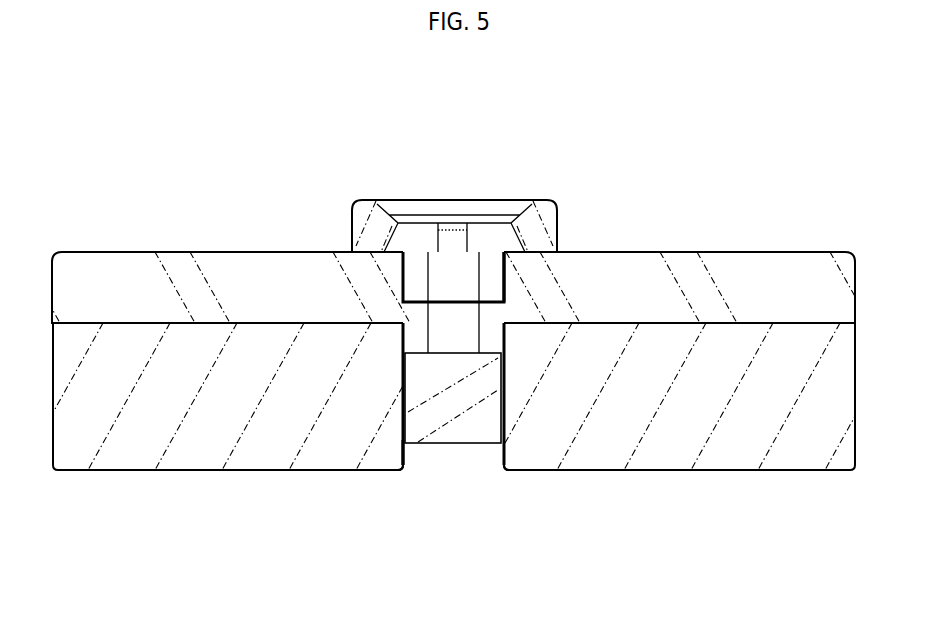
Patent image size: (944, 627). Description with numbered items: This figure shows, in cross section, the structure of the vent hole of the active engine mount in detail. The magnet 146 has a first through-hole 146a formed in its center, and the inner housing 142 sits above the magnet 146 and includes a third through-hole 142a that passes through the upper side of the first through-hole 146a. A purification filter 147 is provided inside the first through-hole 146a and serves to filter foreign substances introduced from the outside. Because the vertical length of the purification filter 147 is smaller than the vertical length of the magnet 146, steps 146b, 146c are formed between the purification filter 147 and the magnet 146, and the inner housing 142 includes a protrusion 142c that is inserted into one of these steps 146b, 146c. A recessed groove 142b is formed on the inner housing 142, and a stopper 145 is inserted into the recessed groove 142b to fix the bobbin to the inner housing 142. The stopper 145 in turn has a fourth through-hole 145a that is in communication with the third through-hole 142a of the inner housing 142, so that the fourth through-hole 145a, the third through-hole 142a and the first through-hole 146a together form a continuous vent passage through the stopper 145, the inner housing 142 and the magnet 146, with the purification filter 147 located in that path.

The inner housing 142 is at (72, 263).
The third through-hole 142a is at (446, 318).
The recessed groove 142b is at (505, 278).
The protrusion 142c is at (404, 341).
The stopper 145 is at (362, 208).
The fourth through-hole 145a is at (468, 278).
The magnet 146 is at (120, 455).
The first through-hole 146a is at (475, 459).
The step 146b is at (512, 343).
The step 146c is at (403, 452).
The purification filter 147 is at (410, 395).